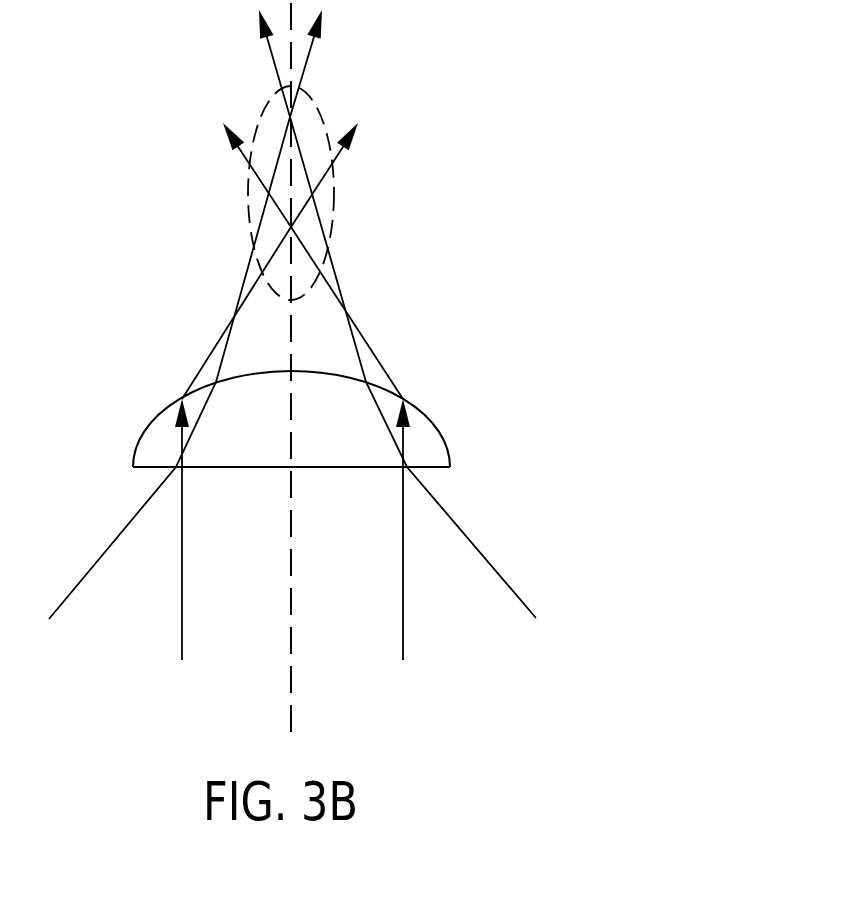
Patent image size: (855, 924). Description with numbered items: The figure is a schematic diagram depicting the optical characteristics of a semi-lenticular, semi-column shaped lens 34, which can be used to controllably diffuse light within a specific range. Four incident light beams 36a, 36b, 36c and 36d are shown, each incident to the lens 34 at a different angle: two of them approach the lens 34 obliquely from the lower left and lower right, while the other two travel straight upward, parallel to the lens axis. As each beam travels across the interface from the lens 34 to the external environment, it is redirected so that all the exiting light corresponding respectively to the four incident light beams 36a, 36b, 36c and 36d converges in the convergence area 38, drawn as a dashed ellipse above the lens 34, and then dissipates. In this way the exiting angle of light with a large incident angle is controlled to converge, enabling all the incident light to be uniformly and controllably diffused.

The lens 34 is at (447, 438).
The convergence area 38 is at (333, 190).
The incident light 36a is at (470, 537).
The incident light 36b is at (403, 577).
The incident light 36c is at (183, 583).
The incident light 36d is at (82, 582).